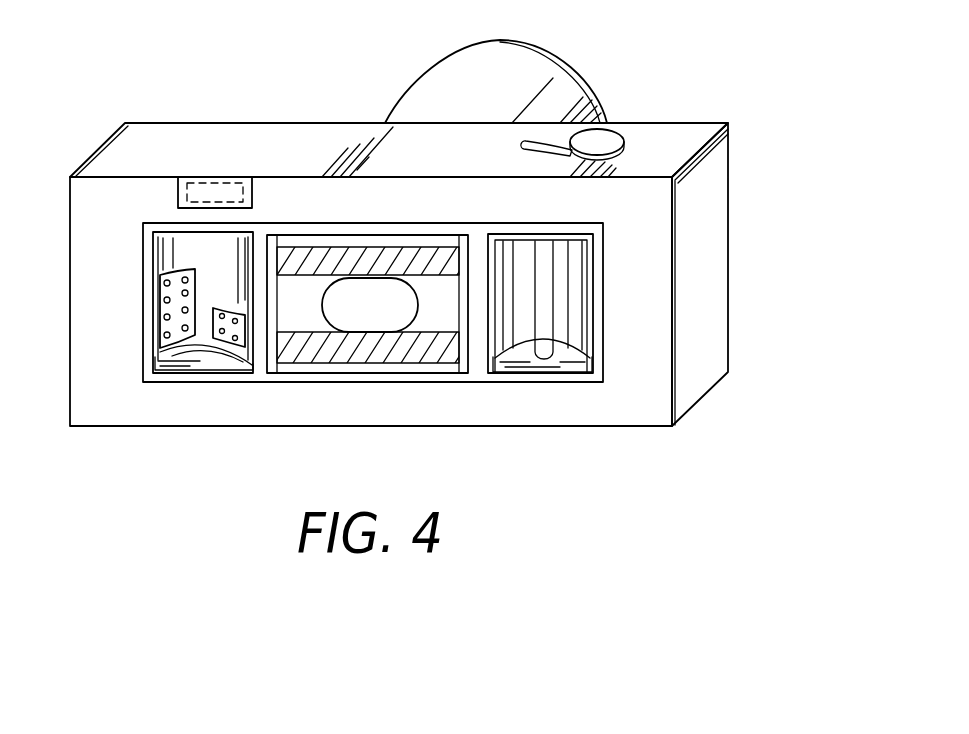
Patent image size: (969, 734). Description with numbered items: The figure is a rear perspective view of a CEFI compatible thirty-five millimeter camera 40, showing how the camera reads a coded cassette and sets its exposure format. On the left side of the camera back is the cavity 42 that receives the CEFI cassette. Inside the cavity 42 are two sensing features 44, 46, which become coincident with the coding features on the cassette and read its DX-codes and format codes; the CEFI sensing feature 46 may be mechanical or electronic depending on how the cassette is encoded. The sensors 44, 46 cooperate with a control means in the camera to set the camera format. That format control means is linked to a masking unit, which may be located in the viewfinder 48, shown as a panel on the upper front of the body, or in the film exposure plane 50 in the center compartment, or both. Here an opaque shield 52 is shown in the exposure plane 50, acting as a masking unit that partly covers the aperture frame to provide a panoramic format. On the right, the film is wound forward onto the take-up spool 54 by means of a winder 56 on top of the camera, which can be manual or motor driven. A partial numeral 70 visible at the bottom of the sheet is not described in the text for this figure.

The camera 40 is at (748, 279).
The cavity 42 is at (156, 251).
The sensing feature 44 is at (158, 328).
The CEFI sensing feature 46 is at (240, 348).
The viewfinder 48 is at (190, 195).
The film exposure plane 50 is at (434, 383).
The opaque shield 52 is at (301, 278).
The take-up spool 54 is at (579, 360).
The winder 56 is at (609, 143).
The element of adjacent figure 70 is at (287, 724).